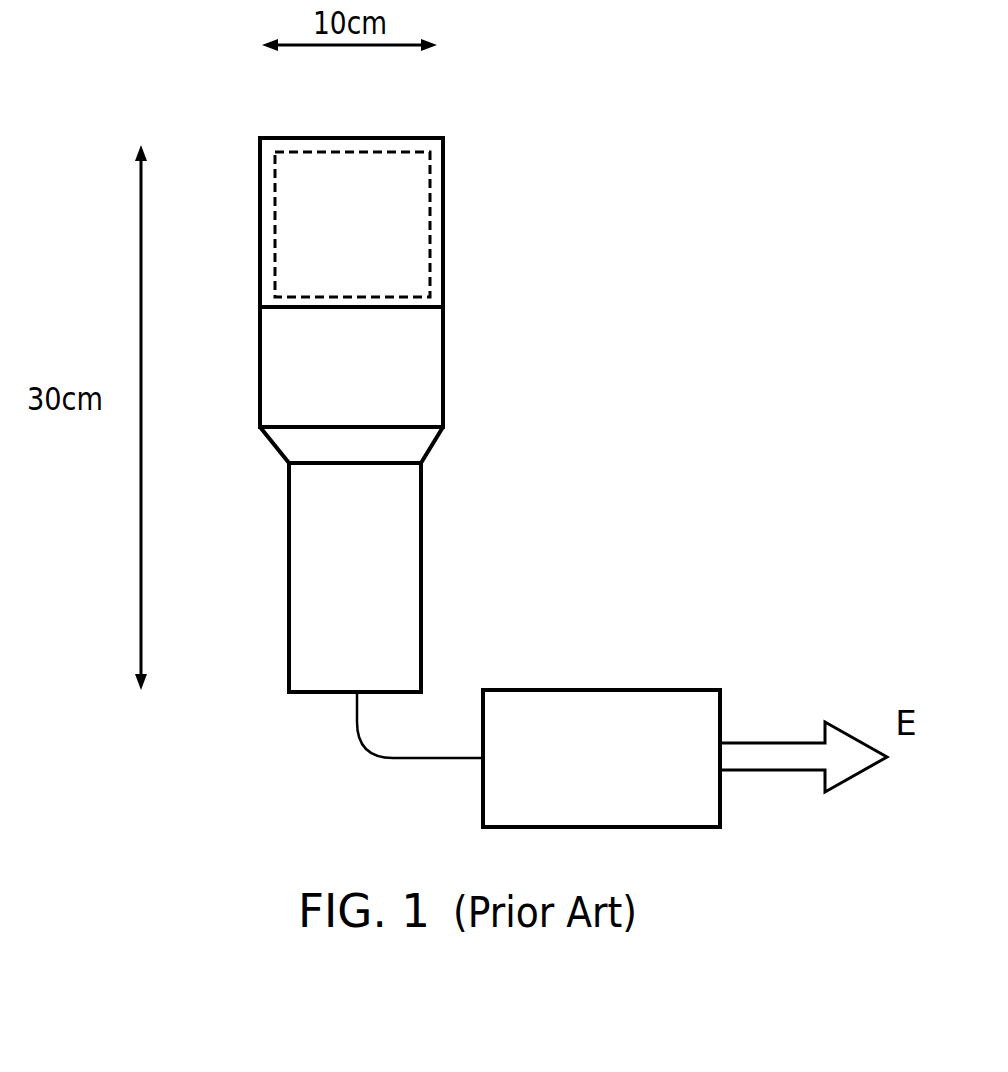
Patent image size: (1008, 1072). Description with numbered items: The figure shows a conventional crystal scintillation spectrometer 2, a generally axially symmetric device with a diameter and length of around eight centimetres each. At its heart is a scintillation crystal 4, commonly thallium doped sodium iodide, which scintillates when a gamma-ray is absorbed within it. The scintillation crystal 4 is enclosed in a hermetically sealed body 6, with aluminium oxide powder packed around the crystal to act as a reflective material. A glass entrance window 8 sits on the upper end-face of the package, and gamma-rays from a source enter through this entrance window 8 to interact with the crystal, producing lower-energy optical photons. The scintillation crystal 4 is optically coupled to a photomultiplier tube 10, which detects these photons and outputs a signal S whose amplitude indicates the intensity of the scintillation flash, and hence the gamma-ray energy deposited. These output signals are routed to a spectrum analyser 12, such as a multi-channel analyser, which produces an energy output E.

The crystal scintillation spectrometer 2 is at (754, 227).
The scintillation crystal 4 is at (297, 245).
The hermetically sealed body 6 is at (447, 223).
The glass entrance window 8 is at (383, 137).
The photomultiplier tube 10 is at (422, 368).
The spectrum analyser 12 is at (595, 690).